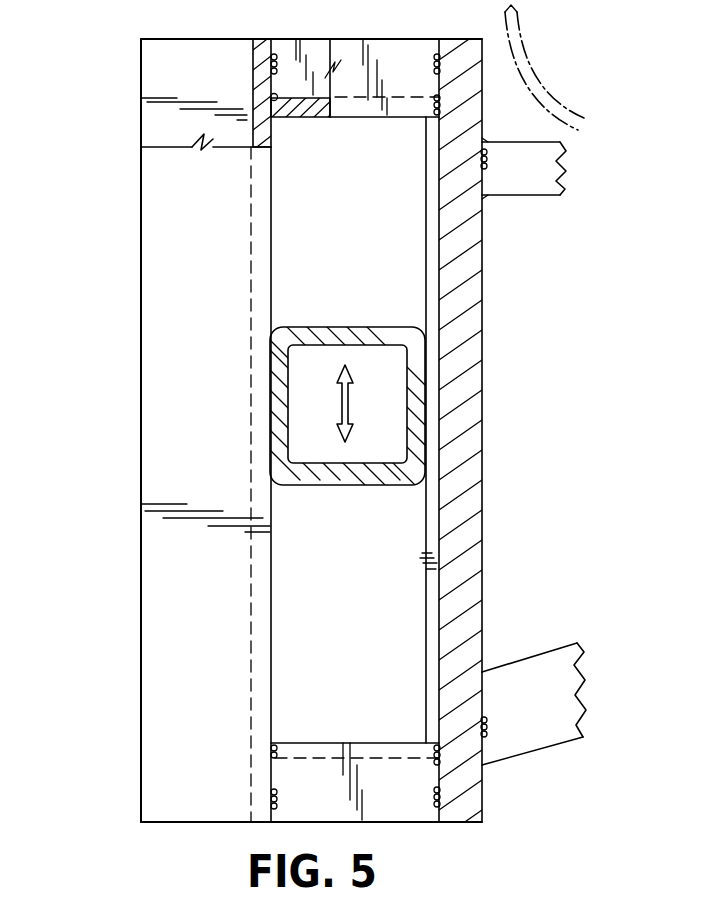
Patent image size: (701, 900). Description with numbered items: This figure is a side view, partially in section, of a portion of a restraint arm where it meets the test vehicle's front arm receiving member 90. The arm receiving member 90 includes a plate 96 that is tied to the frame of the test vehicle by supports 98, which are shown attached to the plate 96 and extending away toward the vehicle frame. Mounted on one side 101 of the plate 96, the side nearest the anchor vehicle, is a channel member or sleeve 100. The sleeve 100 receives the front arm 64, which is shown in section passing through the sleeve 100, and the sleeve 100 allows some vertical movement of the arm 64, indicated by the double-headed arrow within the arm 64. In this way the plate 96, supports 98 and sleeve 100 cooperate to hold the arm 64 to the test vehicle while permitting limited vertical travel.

The arm receiving member 90 is at (128, 471).
The sleeve 100 is at (155, 313).
The one side of the plate 101 is at (438, 200).
The front arm 64 is at (337, 325).
The plate 96 is at (484, 548).
The supports 98 is at (535, 182).